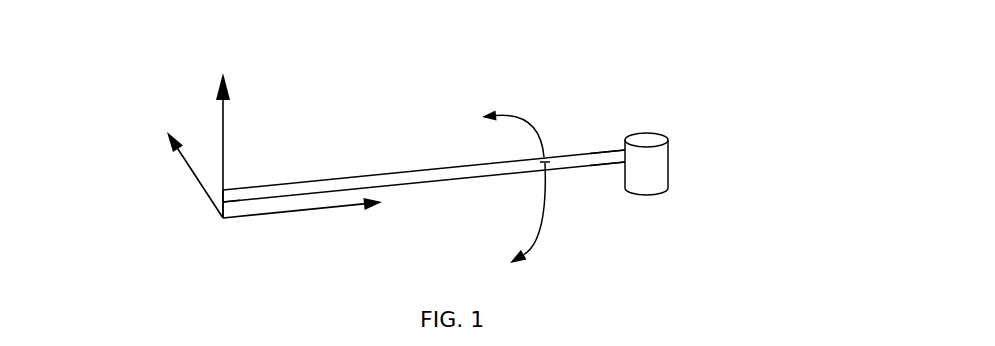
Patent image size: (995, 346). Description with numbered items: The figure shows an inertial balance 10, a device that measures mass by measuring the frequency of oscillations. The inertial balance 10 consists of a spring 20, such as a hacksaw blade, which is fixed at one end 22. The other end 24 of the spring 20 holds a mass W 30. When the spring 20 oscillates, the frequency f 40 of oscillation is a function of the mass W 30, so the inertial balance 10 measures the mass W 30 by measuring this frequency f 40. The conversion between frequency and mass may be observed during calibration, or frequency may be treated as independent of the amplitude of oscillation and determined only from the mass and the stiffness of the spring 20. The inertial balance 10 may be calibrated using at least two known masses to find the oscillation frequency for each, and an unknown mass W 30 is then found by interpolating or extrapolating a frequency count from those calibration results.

The inertial balance 10 is at (381, 153).
The spring 20 is at (298, 180).
The end 22 is at (213, 199).
The other end 24 is at (615, 147).
The mass W 30 is at (643, 138).
The frequency f 40 is at (506, 193).